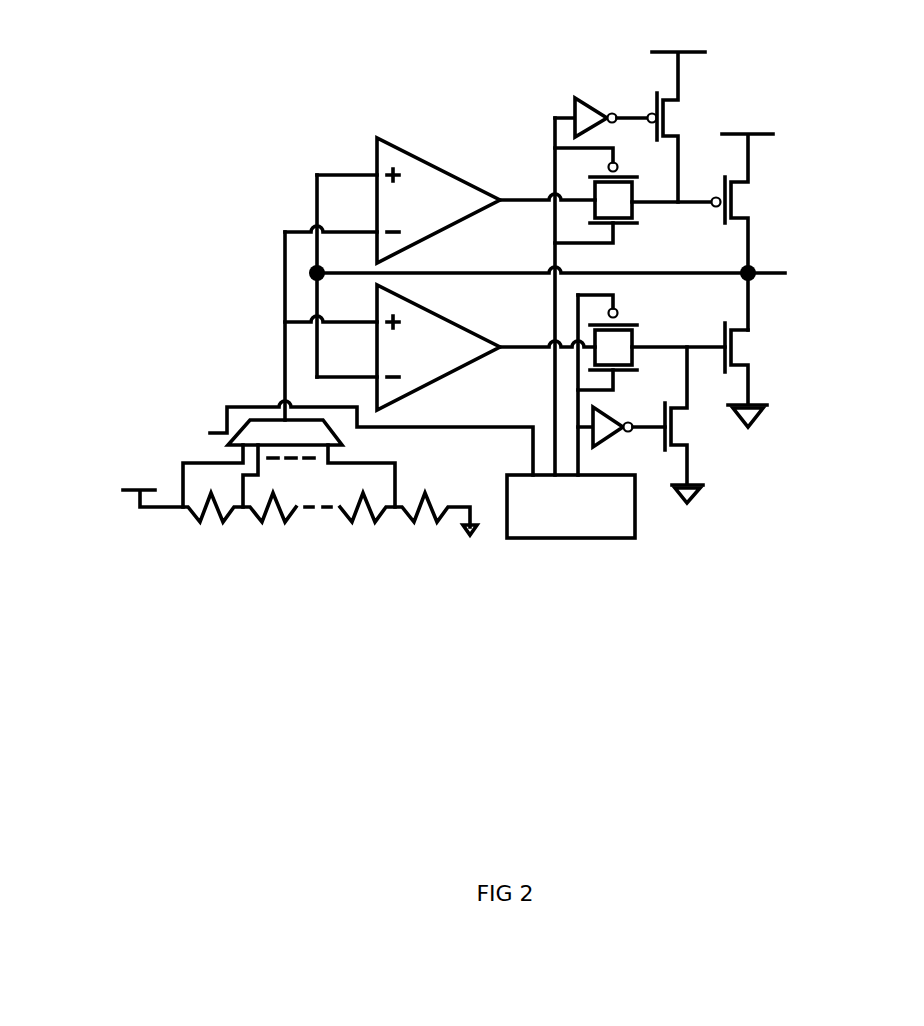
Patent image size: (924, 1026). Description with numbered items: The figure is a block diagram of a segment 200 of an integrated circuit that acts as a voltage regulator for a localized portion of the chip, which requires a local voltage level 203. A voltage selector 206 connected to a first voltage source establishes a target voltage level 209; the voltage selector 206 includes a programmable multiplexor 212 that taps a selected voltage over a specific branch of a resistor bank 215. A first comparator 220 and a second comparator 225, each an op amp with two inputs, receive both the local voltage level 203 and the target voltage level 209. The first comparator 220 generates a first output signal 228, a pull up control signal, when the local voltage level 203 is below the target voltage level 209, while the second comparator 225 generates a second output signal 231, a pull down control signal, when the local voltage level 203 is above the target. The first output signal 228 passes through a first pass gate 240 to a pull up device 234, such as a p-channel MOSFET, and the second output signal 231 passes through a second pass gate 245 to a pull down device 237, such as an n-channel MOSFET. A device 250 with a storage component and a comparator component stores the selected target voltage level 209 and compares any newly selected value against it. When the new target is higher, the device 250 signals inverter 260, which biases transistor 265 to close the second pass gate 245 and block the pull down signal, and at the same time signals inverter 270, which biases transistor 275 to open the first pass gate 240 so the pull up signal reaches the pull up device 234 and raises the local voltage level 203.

The segment 200 is at (475, 386).
The local voltage level 203 is at (818, 255).
The voltage selector 206 is at (180, 566).
The target voltage level 209 is at (127, 390).
The programmable multiplexor 212 is at (260, 420).
The resistor bank 215 is at (346, 570).
The first comparator 220 is at (440, 168).
The second comparator 225 is at (440, 377).
The first output signal 228 is at (533, 200).
The second output signal 231 is at (533, 345).
The pull up device 234 is at (745, 197).
The pull down device 237 is at (743, 350).
The first pass gate 240 is at (632, 208).
The second pass gate 245 is at (632, 338).
The device 250 is at (573, 540).
The inverter 260 is at (612, 443).
The transistor 265 is at (685, 430).
The inverter 270 is at (600, 97).
The transistor 275 is at (673, 116).